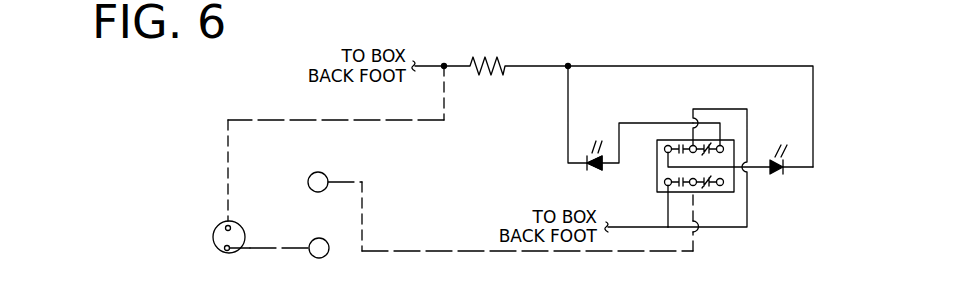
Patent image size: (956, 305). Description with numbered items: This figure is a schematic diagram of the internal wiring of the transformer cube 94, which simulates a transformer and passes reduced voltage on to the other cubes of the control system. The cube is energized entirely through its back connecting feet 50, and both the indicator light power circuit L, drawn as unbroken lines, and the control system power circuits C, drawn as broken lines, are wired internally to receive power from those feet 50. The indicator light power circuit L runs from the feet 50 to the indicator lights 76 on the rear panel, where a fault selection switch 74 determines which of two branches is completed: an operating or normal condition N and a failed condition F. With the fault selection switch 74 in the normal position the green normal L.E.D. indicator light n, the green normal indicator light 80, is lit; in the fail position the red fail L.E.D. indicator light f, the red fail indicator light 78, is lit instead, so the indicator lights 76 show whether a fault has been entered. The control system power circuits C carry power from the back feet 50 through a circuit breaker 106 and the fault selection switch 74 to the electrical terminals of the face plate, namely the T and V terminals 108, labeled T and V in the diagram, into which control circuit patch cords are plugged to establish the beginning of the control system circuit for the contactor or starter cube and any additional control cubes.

The feet 50 is at (419, 57).
The fault selection switch 74 is at (731, 157).
The indicator lights 76 is at (606, 178).
The red fail indicator light 78 is at (605, 150).
The green normal indicator light 80 is at (778, 175).
The transformer cube 94 is at (256, 92).
The circuit breaker 106 is at (214, 226).
The T and V terminals 108 is at (325, 172).
The indicator light power circuit L is at (722, 58).
The normal condition N is at (742, 192).
The failed condition F is at (644, 123).
The fail L.E.D. indicator light f is at (580, 152).
The normal L.E.D. indicator light n is at (790, 176).
The control system power circuits C is at (420, 262).
The V terminal V is at (318, 201).
The T terminal T is at (317, 226).